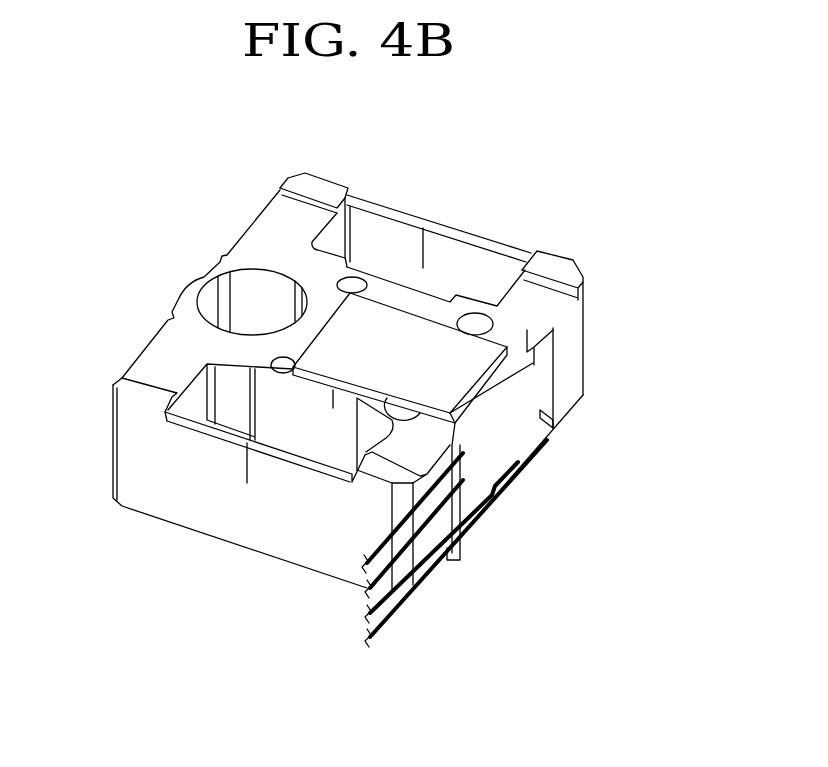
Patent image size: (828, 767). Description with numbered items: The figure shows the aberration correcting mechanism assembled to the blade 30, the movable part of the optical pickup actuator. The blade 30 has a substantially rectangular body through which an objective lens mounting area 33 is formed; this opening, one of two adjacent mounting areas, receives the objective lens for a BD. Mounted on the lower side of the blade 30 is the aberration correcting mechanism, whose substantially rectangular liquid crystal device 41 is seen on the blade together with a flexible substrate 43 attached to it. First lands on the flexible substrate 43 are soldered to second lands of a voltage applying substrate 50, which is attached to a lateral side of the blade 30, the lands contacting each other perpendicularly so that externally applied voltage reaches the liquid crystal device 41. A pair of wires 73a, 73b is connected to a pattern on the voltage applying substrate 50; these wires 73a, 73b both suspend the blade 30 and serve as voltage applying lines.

The blade 30 is at (560, 250).
The objective lens mounting area 33 is at (217, 290).
The liquid crystal device 41 is at (357, 360).
The flexible substrate 43 is at (520, 370).
The voltage applying substrate 50 is at (572, 330).
The wire 73a is at (395, 620).
The wire 73b is at (456, 543).